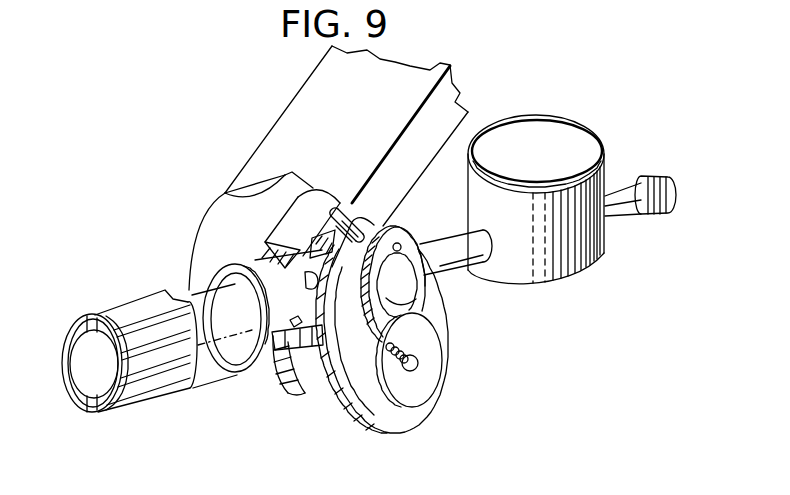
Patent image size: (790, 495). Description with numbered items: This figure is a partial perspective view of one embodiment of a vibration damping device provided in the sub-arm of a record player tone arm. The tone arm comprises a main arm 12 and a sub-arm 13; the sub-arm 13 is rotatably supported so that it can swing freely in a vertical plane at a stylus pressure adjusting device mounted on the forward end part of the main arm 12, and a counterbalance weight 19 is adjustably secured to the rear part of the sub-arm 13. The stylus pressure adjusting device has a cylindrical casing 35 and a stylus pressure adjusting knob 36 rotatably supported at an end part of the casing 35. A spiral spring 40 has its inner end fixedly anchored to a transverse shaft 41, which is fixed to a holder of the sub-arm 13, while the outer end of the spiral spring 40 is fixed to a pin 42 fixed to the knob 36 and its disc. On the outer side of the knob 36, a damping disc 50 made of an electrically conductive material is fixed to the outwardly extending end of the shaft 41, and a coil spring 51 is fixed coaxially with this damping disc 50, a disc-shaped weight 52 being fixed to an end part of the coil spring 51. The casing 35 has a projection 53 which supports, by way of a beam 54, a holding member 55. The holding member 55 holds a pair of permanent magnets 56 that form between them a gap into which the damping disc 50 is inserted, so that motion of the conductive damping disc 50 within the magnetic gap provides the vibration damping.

The main arm 12 is at (277, 115).
The sub-arm 13 is at (458, 268).
The counterbalance weight 19 is at (595, 136).
The cylindrical casing 35 is at (255, 197).
The stylus pressure adjusting knob 36 is at (310, 385).
The spiral spring 40 is at (311, 307).
The transverse shaft 41 is at (305, 279).
The pin 42 is at (293, 325).
The damping disc 50 is at (422, 410).
The coil spring 51 is at (395, 365).
The disc-shaped weight 52 is at (428, 376).
The projection 53 is at (322, 192).
The beam 54 is at (350, 217).
The holding member 55 is at (392, 232).
The permanent magnets 56 is at (407, 296).